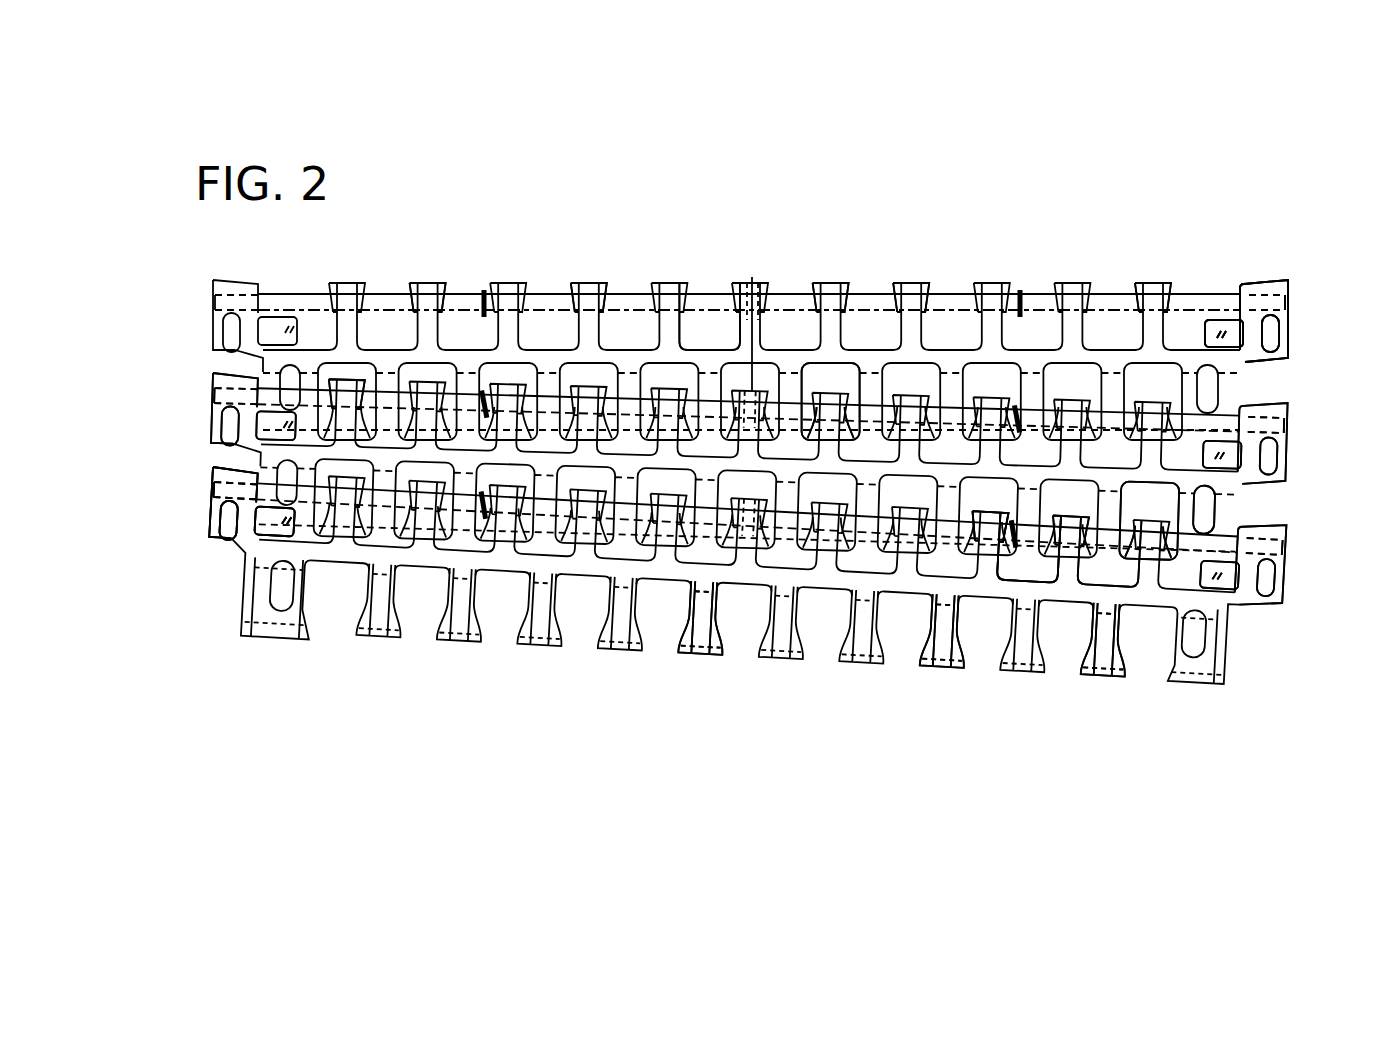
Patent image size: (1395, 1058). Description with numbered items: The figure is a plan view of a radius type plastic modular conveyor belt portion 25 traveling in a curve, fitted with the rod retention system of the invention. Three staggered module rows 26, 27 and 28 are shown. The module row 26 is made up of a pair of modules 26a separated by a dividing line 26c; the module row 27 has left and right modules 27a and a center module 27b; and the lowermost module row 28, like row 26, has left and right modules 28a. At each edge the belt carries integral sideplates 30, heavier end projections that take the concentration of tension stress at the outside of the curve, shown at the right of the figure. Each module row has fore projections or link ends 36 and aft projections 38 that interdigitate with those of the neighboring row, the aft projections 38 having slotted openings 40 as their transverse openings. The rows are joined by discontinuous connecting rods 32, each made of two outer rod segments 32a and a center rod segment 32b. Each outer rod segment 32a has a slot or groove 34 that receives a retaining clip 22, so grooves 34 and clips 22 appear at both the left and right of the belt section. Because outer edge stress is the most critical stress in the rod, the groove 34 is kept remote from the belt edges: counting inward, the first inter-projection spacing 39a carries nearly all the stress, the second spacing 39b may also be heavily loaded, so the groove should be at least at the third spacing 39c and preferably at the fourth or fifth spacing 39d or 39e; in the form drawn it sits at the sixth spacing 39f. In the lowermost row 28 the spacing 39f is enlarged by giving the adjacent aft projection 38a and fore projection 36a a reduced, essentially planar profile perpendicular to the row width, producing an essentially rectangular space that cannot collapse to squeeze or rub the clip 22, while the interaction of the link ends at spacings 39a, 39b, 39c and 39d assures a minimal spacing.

The radius type plastic modular conveyor belt portion 25 is at (1086, 200).
The module row 26 is at (1298, 313).
The module row 27 is at (1299, 437).
The module row 28 is at (1299, 550).
The retaining clip 22 is at (496, 289).
The slot or groove 34 is at (484, 290).
The module 26a is at (603, 268).
The dividing line 26c is at (762, 290).
The outer rod segment 32a is at (388, 291).
The center rod segment 32b is at (707, 292).
The discontinuous connecting rod 32 is at (1231, 284).
The fore projection 36 is at (347, 380).
The reduced-profile fore projection 36a is at (990, 547).
The integral sideplate 30 is at (1292, 372).
The module 27a is at (1281, 396).
The center module 27b is at (850, 387).
The module 28a is at (227, 555).
The aft projection 38 is at (684, 654).
The reduced-profile aft projection 38a is at (1013, 552).
The first inter-projection spacing 39a is at (1237, 535).
The second inter-projection spacing 39b is at (1174, 520).
The third inter-projection spacing 39c is at (1135, 560).
The fourth inter-projection spacing 39d is at (1093, 580).
The fifth inter-projection spacing 39e is at (1040, 560).
The sixth inter-projection spacing 39f is at (1003, 550).
The slotted opening 40 is at (1224, 649).